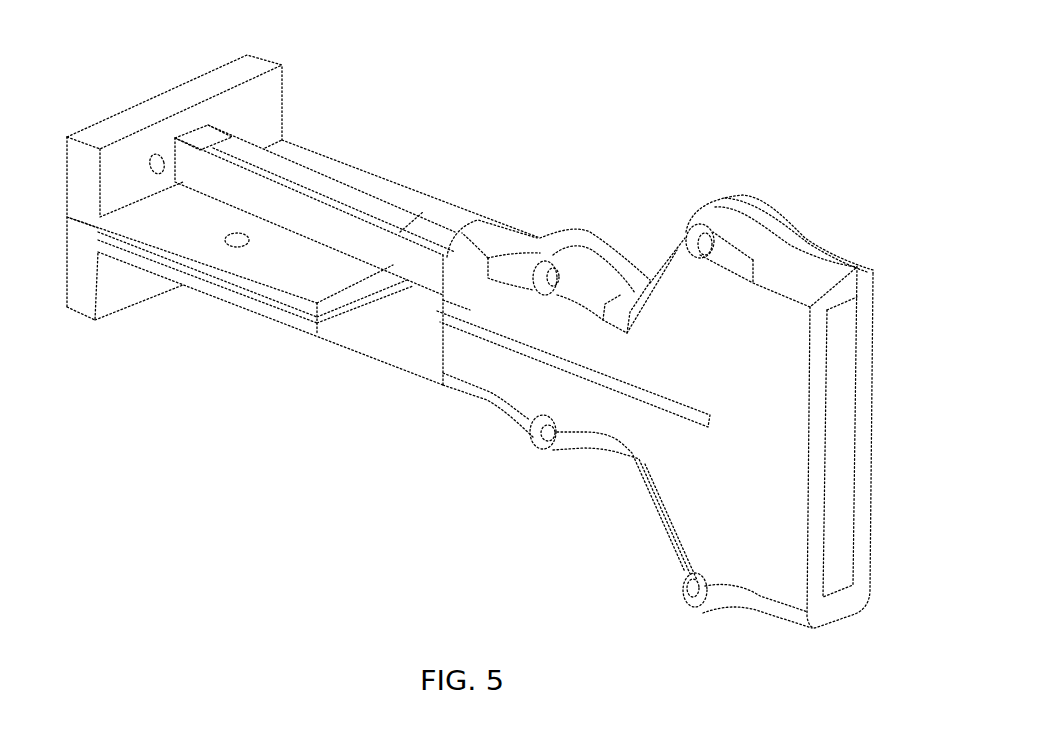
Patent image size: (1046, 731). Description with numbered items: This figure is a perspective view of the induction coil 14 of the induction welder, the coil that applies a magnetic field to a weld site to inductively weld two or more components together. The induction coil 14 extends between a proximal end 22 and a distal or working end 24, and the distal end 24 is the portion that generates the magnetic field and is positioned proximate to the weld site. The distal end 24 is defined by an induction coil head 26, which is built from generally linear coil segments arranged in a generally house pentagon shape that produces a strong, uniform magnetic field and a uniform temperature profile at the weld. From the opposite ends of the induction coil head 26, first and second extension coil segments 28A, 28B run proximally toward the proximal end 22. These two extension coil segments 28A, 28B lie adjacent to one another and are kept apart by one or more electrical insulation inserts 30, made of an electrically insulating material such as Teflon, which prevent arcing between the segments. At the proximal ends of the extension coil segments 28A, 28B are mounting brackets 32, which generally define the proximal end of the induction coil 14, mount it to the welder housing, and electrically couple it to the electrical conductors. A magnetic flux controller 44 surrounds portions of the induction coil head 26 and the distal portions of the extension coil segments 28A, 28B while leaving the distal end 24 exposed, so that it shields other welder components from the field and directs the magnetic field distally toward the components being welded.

The induction coil 14 is at (294, 463).
The proximal end 22 is at (93, 86).
The distal end 24 is at (894, 491).
The induction coil head 26 is at (749, 189).
The first extension coil segment 28A is at (334, 218).
The second extension coil segment 28B is at (391, 320).
The electrical insulation insert 30 is at (224, 277).
The mounting bracket 32 is at (148, 138).
The magnetic flux controller 44 is at (724, 478).